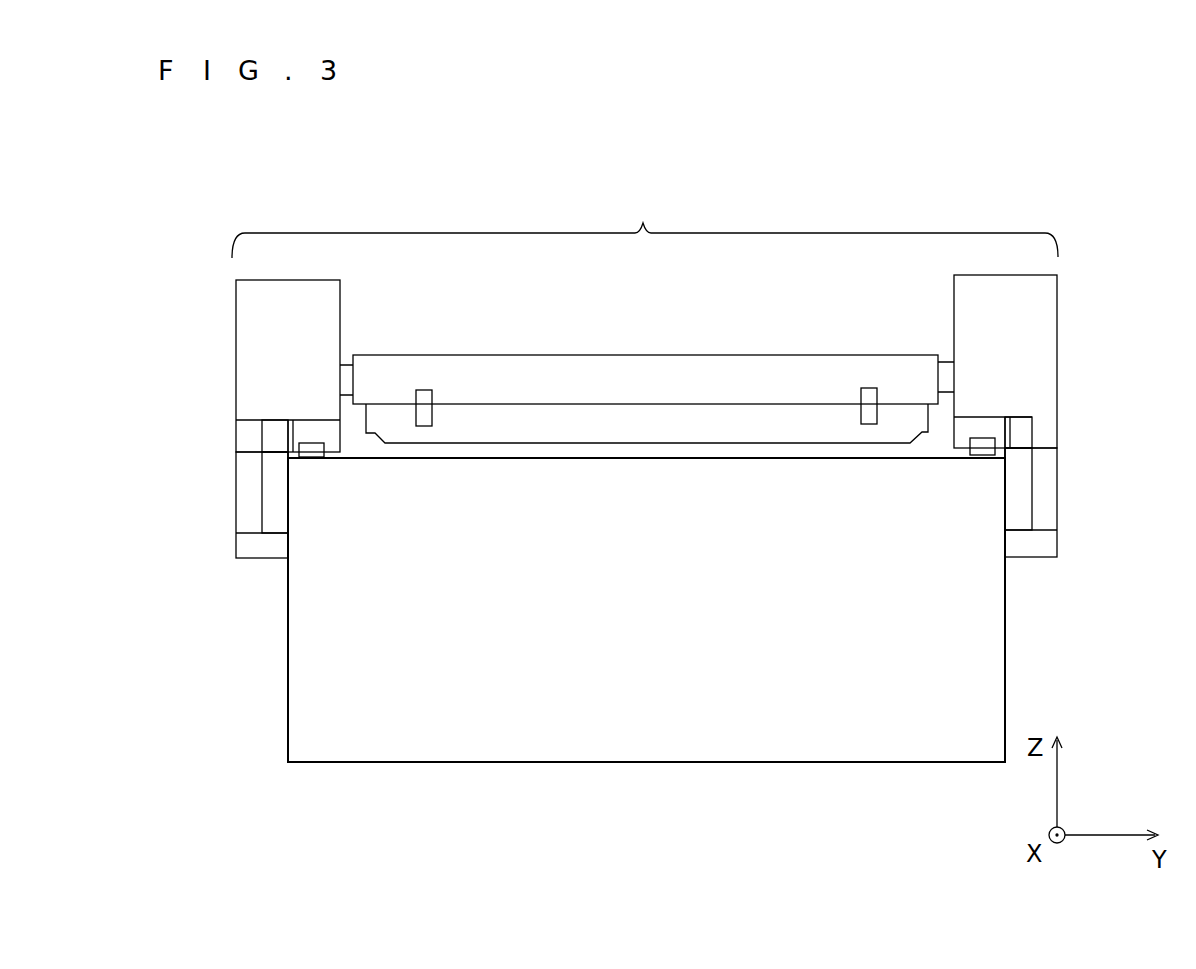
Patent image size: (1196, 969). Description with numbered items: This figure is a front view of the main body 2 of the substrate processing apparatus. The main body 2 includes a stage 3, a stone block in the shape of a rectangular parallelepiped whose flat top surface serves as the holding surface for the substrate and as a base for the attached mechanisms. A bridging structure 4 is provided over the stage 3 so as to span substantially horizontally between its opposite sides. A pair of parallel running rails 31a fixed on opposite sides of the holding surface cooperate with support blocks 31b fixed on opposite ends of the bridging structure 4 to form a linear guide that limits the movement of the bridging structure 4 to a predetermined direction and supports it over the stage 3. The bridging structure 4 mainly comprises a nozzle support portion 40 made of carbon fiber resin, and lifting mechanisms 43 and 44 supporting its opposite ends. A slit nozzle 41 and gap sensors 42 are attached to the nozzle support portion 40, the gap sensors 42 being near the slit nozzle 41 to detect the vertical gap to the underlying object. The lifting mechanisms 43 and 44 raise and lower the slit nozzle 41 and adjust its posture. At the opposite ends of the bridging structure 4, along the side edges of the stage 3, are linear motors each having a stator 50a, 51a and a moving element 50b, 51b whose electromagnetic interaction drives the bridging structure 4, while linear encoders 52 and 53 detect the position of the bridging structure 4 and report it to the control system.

The main body 2 is at (217, 192).
The stage 3 is at (1005, 610).
The bridging structure 4 is at (645, 224).
The running rails 31a is at (297, 420).
The support blocks 31b is at (315, 443).
The nozzle support portion 40 is at (742, 356).
The slit nozzle 41 is at (527, 418).
The gap sensors 42 is at (417, 396).
The lifting mechanism 43 is at (236, 287).
The lifting mechanism 44 is at (1057, 288).
The stator 50a is at (272, 465).
The moving element 50b is at (273, 426).
The stator 51a is at (1022, 472).
The moving element 51b is at (1030, 430).
The linear encoder 52 is at (236, 502).
The linear encoder 53 is at (1057, 518).